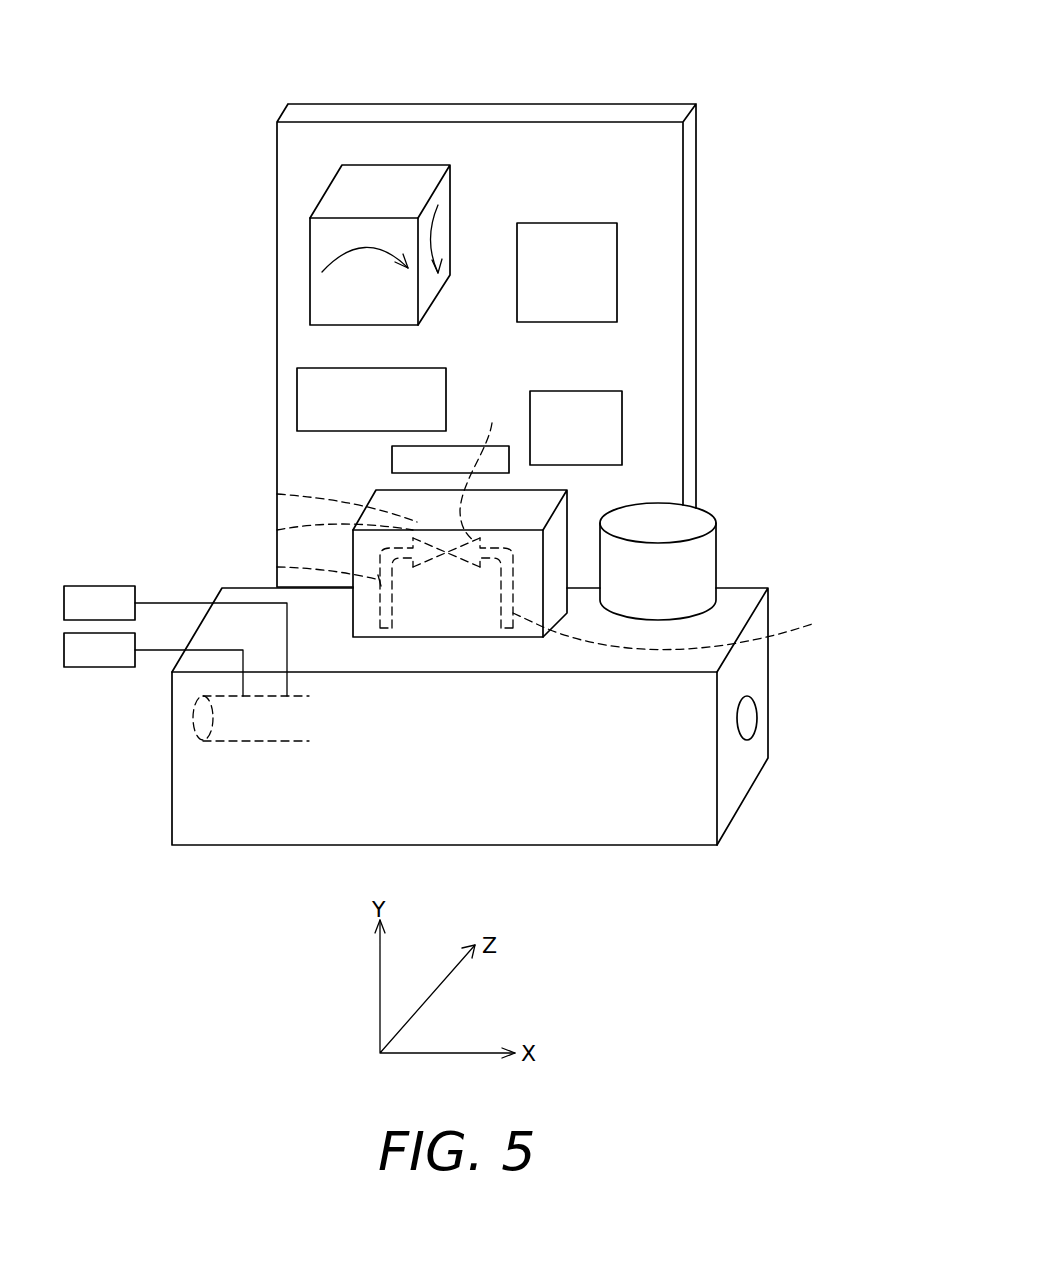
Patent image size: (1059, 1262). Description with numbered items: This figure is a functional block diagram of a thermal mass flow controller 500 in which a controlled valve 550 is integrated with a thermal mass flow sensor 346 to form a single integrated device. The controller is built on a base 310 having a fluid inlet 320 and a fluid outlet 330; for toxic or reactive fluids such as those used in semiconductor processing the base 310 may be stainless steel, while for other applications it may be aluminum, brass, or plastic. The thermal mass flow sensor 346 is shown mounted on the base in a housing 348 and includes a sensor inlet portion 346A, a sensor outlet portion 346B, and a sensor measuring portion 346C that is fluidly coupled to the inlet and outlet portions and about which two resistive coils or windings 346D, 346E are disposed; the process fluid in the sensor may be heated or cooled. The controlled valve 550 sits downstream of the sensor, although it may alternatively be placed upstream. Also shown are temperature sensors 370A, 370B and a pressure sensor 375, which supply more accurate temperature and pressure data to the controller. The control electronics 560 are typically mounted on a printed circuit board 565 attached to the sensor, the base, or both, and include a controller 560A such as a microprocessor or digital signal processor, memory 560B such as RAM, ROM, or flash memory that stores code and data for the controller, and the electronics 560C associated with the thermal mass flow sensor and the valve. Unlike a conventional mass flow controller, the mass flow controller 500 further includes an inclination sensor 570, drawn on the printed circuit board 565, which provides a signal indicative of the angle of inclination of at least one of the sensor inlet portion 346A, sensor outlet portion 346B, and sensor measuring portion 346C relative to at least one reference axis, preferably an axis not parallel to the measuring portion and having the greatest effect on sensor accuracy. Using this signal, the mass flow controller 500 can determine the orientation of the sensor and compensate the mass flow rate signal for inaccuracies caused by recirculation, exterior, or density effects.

The thermal mass flow controller 500 is at (230, 67).
The printed circuit board 565 is at (650, 103).
The inclination sensor 570 is at (330, 183).
The control electronics 560 is at (628, 260).
The controller 560A is at (603, 222).
The memory 560B is at (400, 368).
The electronics associated with the thermal mass flow sensor and the valve 560C is at (603, 391).
The temperature sensor 370B is at (392, 459).
The controlled valve 550 is at (716, 577).
The housing block 348 is at (526, 496).
The thermal mass flow sensor 346 is at (372, 491).
The sensor inlet portion 346A is at (295, 570).
The sensor outlet portion 346B is at (697, 631).
The sensor measuring portion 346C is at (311, 532).
The resistive coil 346D is at (313, 502).
The resistive coil 346E is at (492, 469).
The base 310 is at (300, 846).
The fluid outlet 330 is at (753, 703).
The fluid inlet 320 is at (193, 724).
The temperature sensor 370A is at (127, 586).
The pressure sensor 375 is at (125, 667).